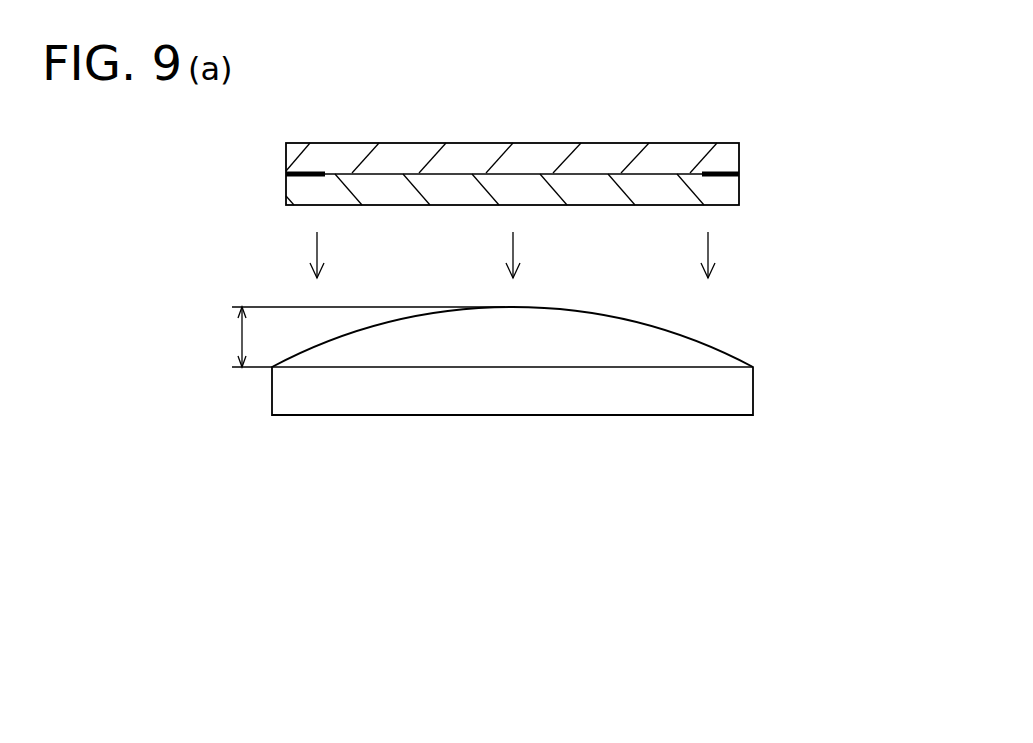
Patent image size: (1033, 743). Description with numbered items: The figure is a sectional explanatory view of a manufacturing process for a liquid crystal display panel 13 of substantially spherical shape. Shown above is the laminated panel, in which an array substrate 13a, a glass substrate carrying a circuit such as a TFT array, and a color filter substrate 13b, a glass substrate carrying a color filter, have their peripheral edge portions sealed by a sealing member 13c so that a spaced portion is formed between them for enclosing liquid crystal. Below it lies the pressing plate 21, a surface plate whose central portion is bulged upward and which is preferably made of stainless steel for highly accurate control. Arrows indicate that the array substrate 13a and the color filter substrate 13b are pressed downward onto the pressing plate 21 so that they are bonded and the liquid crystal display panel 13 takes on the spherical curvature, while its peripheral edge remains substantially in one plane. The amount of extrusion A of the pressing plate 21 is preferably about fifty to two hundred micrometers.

The liquid crystal display panel 13 is at (600, 102).
The array substrate 13a is at (720, 187).
The color filter substrate 13b is at (688, 155).
The sealing member 13c is at (713, 173).
The pressing plate 21 is at (615, 352).
The amount of extrusion A is at (242, 337).